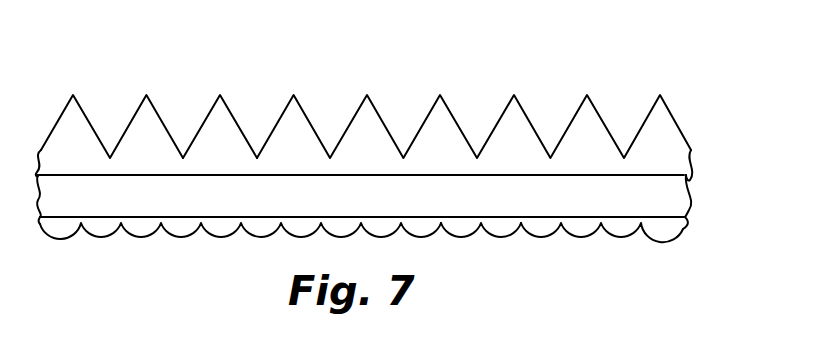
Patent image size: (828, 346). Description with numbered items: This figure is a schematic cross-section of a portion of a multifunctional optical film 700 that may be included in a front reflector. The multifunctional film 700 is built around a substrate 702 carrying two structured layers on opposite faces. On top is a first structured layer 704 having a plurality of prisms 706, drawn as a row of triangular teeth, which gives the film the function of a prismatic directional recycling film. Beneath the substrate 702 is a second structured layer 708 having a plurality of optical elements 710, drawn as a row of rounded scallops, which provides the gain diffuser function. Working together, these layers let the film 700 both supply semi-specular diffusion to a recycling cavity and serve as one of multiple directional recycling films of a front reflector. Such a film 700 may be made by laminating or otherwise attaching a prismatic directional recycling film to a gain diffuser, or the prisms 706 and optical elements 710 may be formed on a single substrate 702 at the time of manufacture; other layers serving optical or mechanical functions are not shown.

The multifunctional optical film 700 is at (124, 62).
The substrate 702 is at (672, 197).
The first structured layer 704 is at (669, 153).
The prisms 706 is at (222, 96).
The second structured layer 708 is at (670, 230).
The optical elements 710 is at (503, 237).